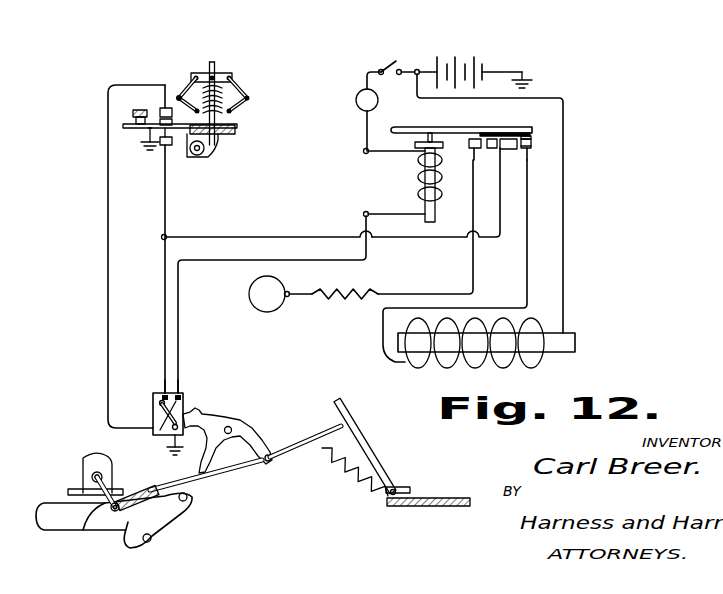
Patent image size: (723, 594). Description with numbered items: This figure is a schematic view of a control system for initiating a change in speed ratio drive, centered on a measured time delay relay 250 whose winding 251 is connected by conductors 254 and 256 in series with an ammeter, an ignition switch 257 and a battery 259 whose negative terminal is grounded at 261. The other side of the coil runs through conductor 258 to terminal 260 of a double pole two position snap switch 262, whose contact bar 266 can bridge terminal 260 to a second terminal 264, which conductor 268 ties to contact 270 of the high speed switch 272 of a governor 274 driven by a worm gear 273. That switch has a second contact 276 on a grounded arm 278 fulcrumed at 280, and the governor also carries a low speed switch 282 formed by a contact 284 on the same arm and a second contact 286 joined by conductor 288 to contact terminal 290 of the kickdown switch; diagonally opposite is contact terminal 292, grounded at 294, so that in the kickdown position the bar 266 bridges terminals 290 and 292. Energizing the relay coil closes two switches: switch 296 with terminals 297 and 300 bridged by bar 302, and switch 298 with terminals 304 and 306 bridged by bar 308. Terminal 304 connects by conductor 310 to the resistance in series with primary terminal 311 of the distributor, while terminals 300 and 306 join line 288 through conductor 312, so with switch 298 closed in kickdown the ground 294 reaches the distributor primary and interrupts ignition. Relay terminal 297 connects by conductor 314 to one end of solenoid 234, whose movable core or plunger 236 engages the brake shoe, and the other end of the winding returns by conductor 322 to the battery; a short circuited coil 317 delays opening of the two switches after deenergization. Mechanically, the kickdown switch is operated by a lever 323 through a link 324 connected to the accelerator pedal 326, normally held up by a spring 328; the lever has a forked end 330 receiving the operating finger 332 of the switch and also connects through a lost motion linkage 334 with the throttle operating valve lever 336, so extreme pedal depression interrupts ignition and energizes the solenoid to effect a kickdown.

The solenoid 234 is at (476, 358).
The movable core or plunger 236 is at (567, 343).
The measured time delay relay 250 is at (462, 110).
The winding of the relay 251 is at (414, 192).
The conductor 254 is at (377, 151).
The conductor 256 is at (366, 127).
The ignition switch 257 is at (395, 60).
The conductor 258 is at (292, 260).
The battery 259 is at (450, 60).
The terminal of the snap switch 260 is at (181, 393).
The ground 261 is at (530, 80).
The double pole two position snap switch 262 is at (152, 403).
The second terminal 264 is at (163, 422).
The contact bar 266 is at (184, 400).
The conductor 268 is at (108, 300).
The contact of the high speed switch 270 is at (166, 107).
The high speed switch 272 is at (182, 96).
The worm gear 273 is at (200, 158).
The governor 274 is at (233, 78).
The second contact 276 is at (150, 110).
The grounded arm 278 is at (173, 130).
The fulcrum 280 is at (122, 125).
The low speed switch 282 is at (158, 136).
The contact 284 is at (152, 131).
The second contact 286 is at (168, 140).
The conductor 288 is at (166, 219).
The contact terminal 290 is at (160, 394).
The contact terminal 292 is at (173, 430).
The ground 294 is at (167, 458).
The switch 296 is at (531, 139).
The terminal 297 is at (532, 144).
The switch 298 is at (475, 150).
The terminal 300 is at (519, 148).
The bar 302 is at (533, 132).
The terminal 304 is at (474, 148).
The terminal 306 is at (497, 137).
The bar 308 is at (481, 127).
The conductor 310 is at (471, 272).
The primary terminal of the distributor 311 is at (285, 312).
The conductor 312 is at (412, 240).
The conductor 314 is at (526, 281).
The short circuited coil 317 is at (428, 112).
The conductor 322 is at (565, 232).
The lever 323 is at (196, 473).
The link 324 is at (278, 462).
The accelerator pedal 326 is at (372, 445).
The spring 328 is at (362, 478).
The forked end 330 is at (194, 413).
The operating finger 332 is at (155, 422).
The lost motion linkage 334 is at (132, 532).
The throttle operating valve lever 336 is at (90, 523).